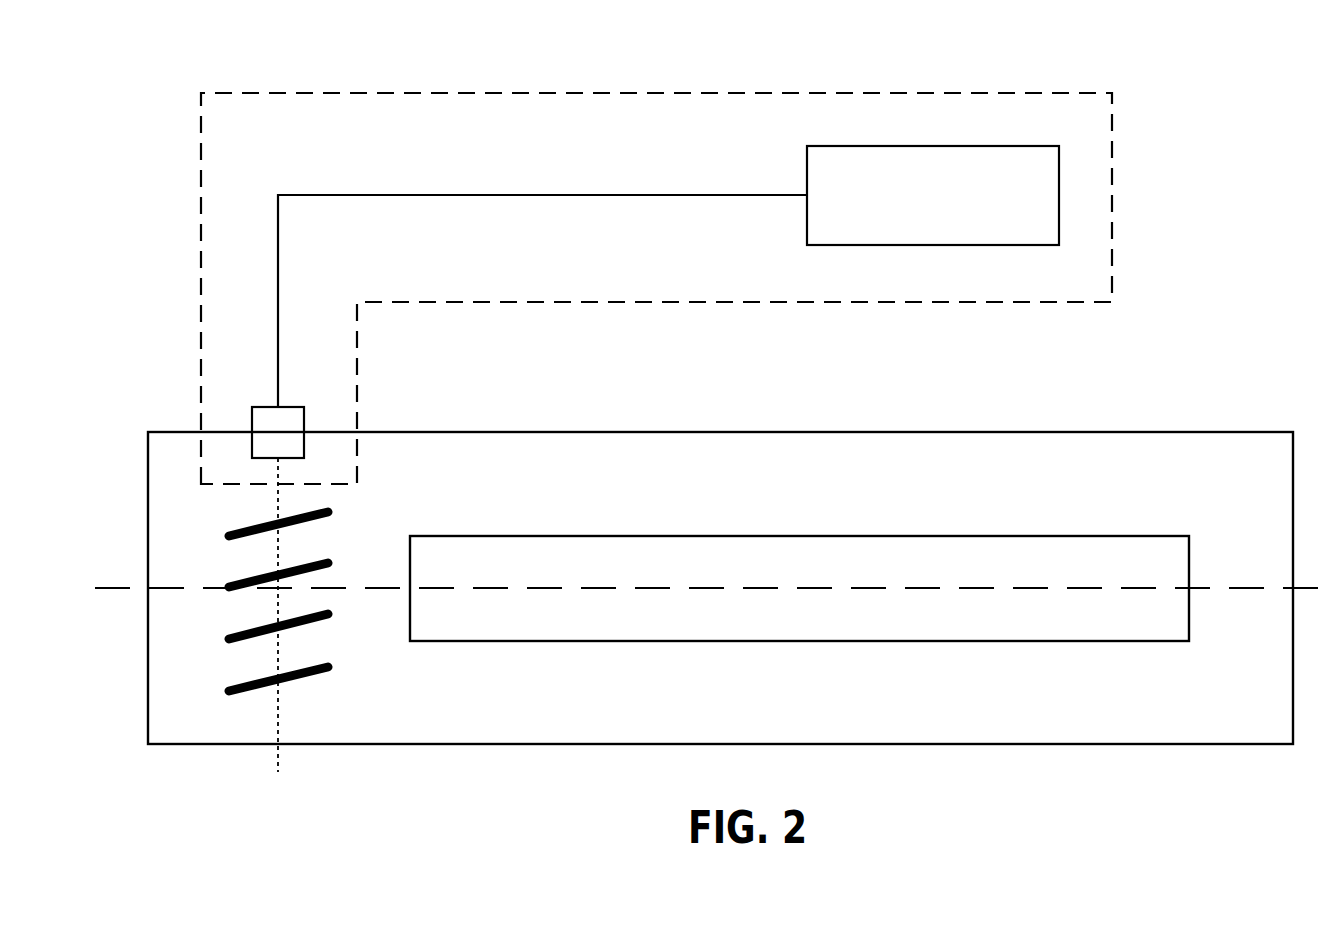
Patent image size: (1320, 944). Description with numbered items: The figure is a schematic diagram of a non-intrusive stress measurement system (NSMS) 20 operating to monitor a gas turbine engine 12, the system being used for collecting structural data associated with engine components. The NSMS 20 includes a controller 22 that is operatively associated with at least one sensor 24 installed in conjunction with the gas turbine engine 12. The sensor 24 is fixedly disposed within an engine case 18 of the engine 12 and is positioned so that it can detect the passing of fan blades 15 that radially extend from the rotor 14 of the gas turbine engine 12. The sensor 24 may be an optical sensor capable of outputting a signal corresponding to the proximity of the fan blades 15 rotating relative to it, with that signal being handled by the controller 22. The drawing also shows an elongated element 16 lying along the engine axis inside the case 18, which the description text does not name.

The gas turbine engine 12 is at (720, 561).
The rotor 14 is at (242, 615).
The fan blades 15 is at (330, 512).
The shaft 16 is at (926, 536).
The engine case 18 is at (1085, 432).
The non-intrusive stress measurement system 20 is at (1030, 93).
The controller 22 is at (933, 195).
The sensor 24 is at (529, 326).